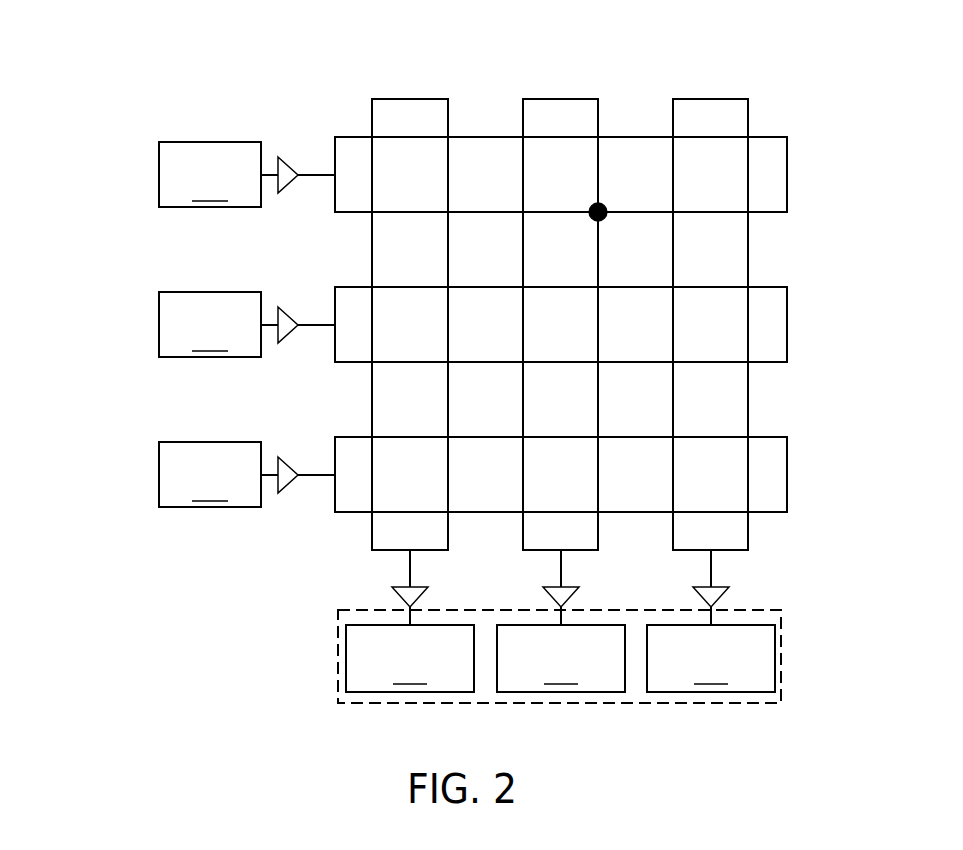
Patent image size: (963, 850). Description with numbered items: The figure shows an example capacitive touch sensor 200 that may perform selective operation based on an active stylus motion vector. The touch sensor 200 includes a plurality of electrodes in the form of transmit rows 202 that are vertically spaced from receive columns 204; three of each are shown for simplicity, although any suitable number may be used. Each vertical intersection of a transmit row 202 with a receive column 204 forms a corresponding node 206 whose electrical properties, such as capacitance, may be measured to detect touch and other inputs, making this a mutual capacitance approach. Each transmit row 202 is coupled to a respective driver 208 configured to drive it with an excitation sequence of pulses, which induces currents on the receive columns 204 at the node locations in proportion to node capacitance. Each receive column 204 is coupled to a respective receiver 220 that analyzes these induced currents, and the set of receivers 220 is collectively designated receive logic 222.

The capacitive touch sensor 200 is at (104, 334).
The transmit row 202 is at (820, 177).
The receive column 204 is at (412, 68).
The node 206 is at (604, 220).
The driver 208 is at (247, 324).
The receiver 220 is at (560, 621).
The receive logic 222 is at (782, 610).